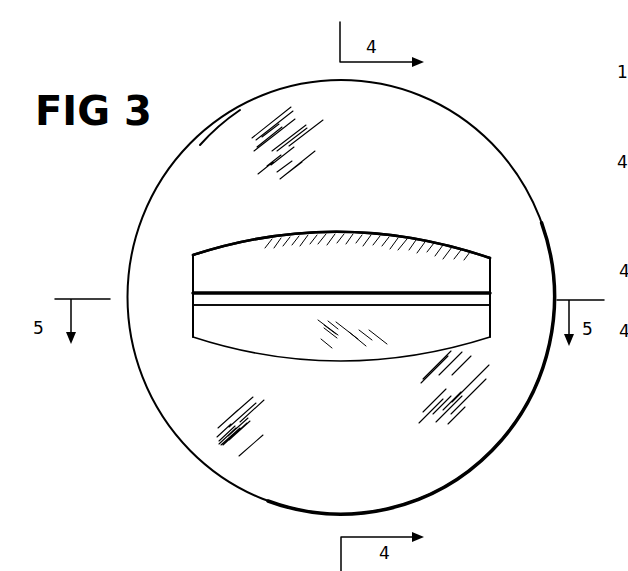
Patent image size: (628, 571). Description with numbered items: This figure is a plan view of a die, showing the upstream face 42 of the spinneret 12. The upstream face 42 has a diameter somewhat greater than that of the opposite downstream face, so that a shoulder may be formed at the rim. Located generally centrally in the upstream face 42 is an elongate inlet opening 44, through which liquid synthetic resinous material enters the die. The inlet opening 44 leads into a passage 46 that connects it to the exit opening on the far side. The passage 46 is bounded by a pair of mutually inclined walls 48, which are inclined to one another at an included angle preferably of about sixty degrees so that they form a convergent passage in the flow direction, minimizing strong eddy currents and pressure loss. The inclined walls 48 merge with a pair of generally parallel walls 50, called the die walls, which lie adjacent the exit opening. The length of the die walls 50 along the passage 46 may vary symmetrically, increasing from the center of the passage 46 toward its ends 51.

The spinneret 12 is at (140, 378).
The upstream face 42 is at (219, 132).
The inlet opening 44 is at (352, 232).
The passage 46 is at (352, 297).
The inclined walls 48 is at (403, 257).
The parallel walls 50 is at (261, 294).
The ends 51 is at (203, 297).